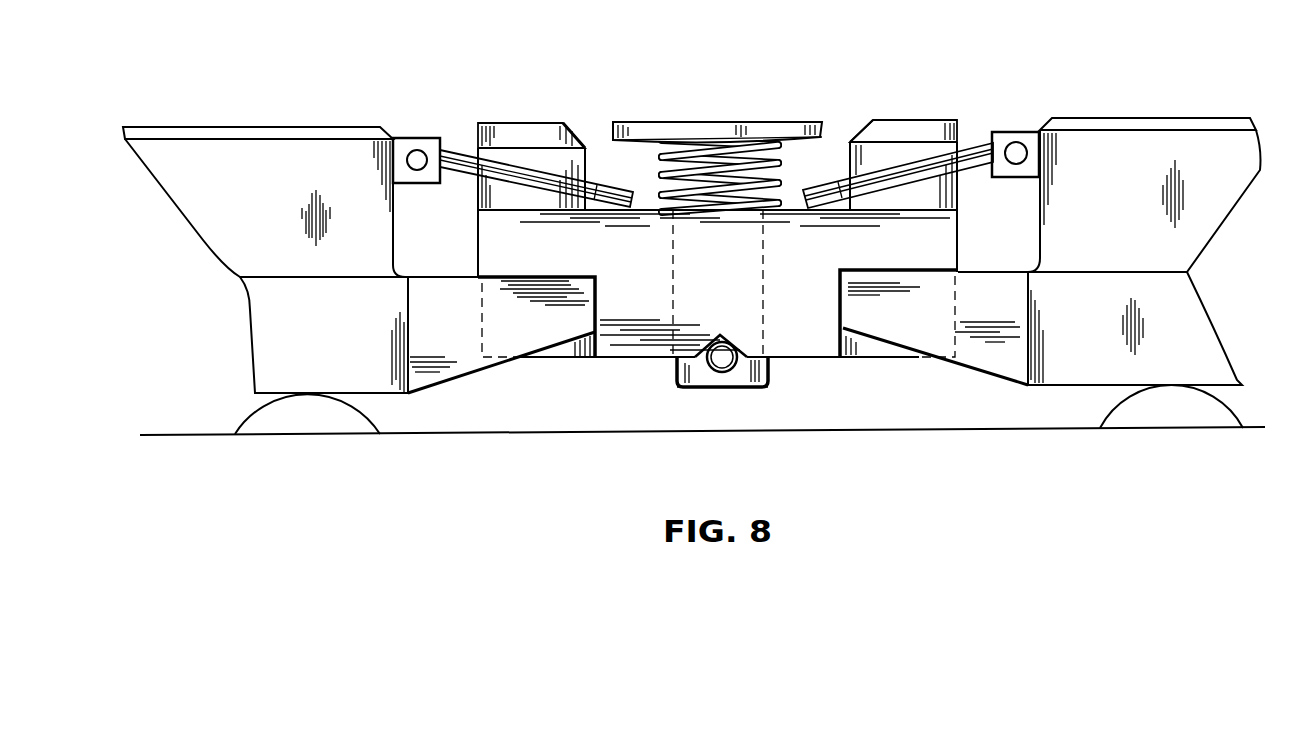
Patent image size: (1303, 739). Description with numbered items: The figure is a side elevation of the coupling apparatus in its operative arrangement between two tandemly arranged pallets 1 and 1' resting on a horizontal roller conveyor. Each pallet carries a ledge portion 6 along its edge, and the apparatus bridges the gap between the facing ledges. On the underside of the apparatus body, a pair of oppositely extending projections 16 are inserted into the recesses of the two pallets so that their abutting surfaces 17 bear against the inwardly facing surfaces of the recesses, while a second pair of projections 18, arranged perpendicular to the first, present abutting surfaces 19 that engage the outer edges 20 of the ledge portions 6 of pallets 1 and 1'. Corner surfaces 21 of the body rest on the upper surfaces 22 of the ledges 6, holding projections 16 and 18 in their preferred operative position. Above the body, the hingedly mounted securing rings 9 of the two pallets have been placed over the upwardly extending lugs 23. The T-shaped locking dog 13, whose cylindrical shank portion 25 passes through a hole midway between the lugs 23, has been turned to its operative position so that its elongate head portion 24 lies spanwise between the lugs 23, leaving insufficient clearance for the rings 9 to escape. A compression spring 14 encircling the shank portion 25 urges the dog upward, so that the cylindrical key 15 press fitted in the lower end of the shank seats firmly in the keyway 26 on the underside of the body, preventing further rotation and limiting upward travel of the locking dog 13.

The pallet 1 is at (301, 217).
The pallet 1' is at (1109, 210).
The ledge portion 6 is at (443, 378).
The ring member 9 is at (593, 184).
The locking dog 13 is at (722, 120).
The compression spring 14 is at (662, 168).
The cylindrical key 15 is at (705, 365).
The projection 16 is at (540, 360).
The abutting surface 17 is at (570, 350).
The projection 18 is at (810, 330).
The abutting surface 19 is at (598, 295).
The outer edge 20 is at (593, 315).
The surface 21 is at (547, 270).
The upper surface 22 is at (470, 275).
The lug 23 is at (552, 132).
The elongate head portion 24 is at (670, 130).
The cylindrical shank portion 25 is at (768, 368).
The keyway 26 is at (720, 337).